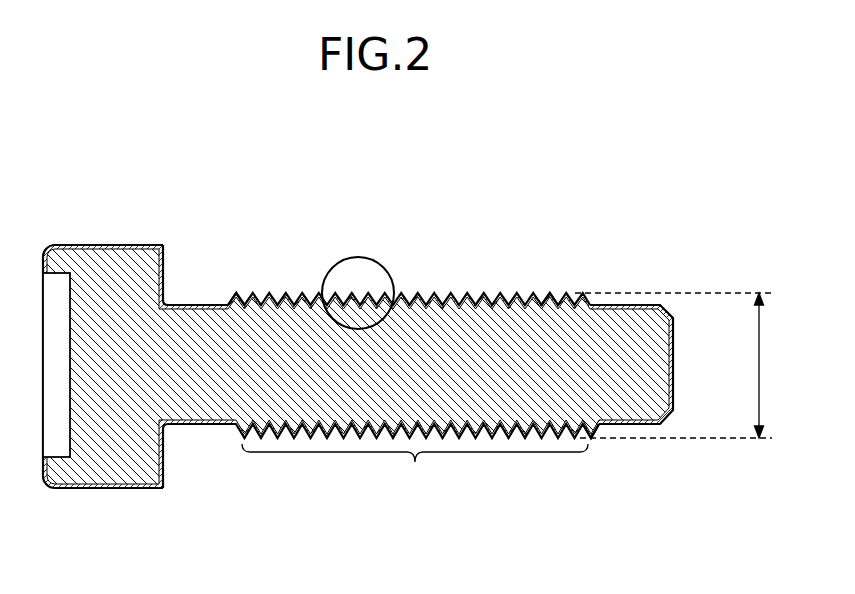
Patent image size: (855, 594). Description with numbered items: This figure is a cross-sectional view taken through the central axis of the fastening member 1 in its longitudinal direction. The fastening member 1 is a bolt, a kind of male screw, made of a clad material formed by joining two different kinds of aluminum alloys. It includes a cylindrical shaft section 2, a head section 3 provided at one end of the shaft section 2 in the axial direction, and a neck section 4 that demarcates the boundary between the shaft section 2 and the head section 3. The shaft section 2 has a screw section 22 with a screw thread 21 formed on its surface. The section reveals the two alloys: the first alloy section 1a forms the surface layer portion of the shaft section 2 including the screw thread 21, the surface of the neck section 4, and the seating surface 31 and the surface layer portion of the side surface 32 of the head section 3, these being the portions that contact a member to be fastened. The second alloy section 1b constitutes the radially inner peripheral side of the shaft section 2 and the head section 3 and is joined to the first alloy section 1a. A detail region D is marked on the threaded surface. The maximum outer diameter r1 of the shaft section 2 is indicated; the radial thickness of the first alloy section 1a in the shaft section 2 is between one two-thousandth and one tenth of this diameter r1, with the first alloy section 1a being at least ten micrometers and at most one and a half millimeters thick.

The fastening member 1 is at (573, 188).
The first alloy section 1a is at (258, 300).
The second alloy section 1b is at (662, 364).
The shaft section 2 is at (445, 292).
The screw thread 21 is at (548, 291).
The screw section 22 is at (415, 468).
The head section 3 is at (120, 245).
The seating surface 31 is at (165, 478).
The side surface 32 is at (108, 488).
The neck section 4 is at (167, 302).
The detail region D is at (358, 256).
The maximum outer diameter r1 is at (673, 365).